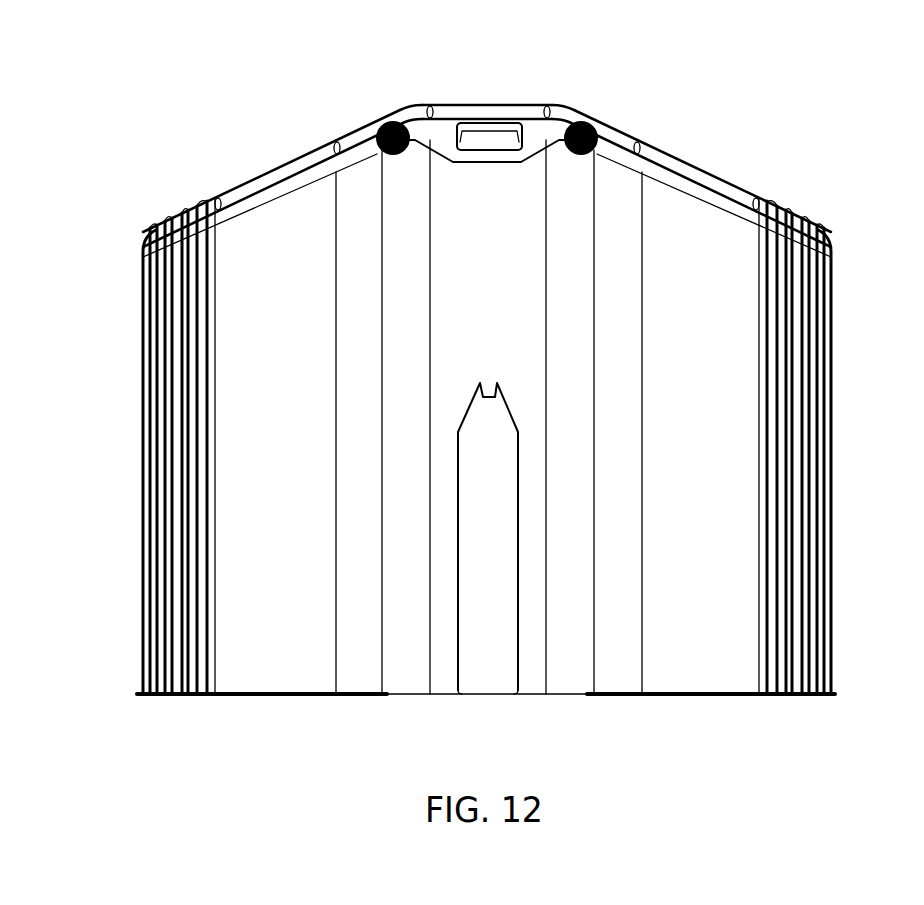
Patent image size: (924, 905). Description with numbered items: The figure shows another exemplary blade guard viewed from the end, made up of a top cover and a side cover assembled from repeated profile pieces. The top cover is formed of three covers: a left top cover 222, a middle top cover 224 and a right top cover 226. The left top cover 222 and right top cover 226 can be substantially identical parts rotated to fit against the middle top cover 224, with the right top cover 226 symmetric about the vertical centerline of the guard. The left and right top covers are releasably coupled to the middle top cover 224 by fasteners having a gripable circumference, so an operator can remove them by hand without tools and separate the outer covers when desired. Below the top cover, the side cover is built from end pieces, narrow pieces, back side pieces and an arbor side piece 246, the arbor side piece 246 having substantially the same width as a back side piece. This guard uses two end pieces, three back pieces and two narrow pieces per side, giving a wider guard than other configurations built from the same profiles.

The left top cover 222 is at (272, 168).
The middle top cover 224 is at (503, 100).
The right top cover 226 is at (722, 178).
The arbor side piece 246 is at (537, 673).